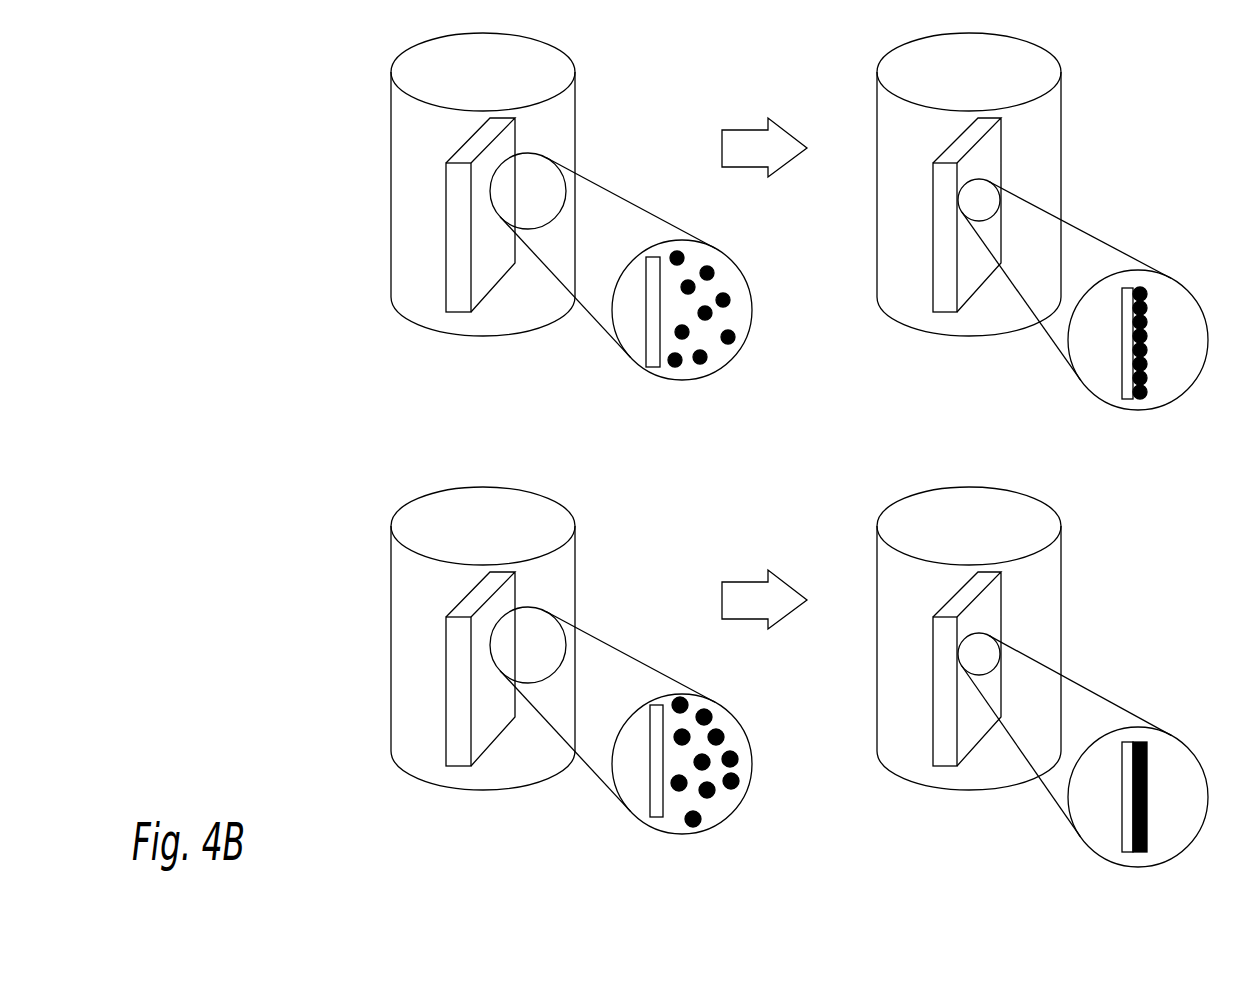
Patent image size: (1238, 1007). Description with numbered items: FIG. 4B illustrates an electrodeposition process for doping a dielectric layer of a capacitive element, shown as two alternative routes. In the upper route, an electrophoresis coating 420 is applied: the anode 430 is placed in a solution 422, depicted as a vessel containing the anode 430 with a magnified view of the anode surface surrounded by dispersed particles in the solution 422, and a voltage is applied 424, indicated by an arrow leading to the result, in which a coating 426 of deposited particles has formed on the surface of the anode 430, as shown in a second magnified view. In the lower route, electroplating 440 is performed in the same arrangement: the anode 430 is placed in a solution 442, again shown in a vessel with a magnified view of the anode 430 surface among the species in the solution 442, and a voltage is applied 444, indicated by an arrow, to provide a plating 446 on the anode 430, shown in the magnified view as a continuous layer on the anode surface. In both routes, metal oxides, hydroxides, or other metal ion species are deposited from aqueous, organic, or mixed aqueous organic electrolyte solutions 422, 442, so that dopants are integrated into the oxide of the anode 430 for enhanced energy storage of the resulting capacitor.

The electrophoresis coating 420 is at (278, 160).
The solution 422 is at (537, 158).
The voltage applied 424 is at (745, 129).
The coating 426 is at (1147, 262).
The anode 430 is at (446, 273).
The electroplating 440 is at (278, 613).
The solution 442 is at (537, 610).
The voltage applied 444 is at (745, 582).
The plating 446 is at (1147, 717).